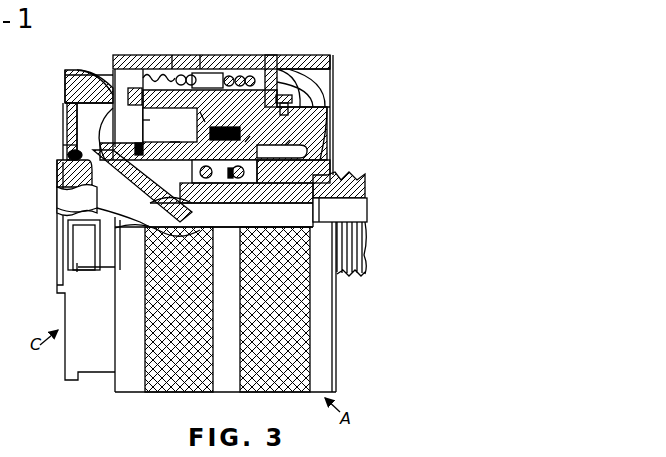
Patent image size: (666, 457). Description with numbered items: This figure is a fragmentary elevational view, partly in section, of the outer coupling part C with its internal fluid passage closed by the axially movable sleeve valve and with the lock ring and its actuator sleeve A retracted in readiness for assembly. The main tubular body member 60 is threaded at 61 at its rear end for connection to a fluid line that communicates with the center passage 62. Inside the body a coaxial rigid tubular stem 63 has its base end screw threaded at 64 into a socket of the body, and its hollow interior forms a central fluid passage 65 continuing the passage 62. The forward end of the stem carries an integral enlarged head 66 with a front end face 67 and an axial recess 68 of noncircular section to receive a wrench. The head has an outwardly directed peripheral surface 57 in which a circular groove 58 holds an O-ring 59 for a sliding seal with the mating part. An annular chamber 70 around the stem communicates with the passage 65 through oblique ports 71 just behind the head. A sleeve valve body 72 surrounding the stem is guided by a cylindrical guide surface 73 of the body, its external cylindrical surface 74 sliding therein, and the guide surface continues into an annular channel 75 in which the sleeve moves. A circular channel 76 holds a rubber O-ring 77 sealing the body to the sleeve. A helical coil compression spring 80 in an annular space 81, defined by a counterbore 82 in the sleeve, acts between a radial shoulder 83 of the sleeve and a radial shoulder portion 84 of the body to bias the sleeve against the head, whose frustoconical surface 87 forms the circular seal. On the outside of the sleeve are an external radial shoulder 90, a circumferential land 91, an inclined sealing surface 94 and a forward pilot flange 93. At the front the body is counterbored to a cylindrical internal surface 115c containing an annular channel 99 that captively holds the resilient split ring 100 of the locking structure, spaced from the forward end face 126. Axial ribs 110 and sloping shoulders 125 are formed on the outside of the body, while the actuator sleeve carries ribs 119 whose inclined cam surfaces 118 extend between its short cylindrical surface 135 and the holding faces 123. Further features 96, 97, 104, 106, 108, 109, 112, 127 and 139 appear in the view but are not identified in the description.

The peripheral surface 57 is at (58, 285).
The circular groove 58 is at (68, 152).
The O-ring 59 is at (63, 144).
The main tubular body member 60 is at (330, 110).
The threads 61 is at (345, 279).
The center passage 62 is at (336, 217).
The tubular stem 63 is at (125, 304).
The threaded joint 64 is at (282, 180).
The central fluid passage 65 is at (270, 219).
The head 66 is at (98, 190).
The front end face 67 is at (58, 170).
The axial recess 68 is at (60, 208).
The annular chamber 70 is at (185, 131).
The oblique ports 71 is at (160, 246).
The sleeve valve body 72 is at (158, 168).
The cylindrical guide surface 73 is at (262, 146).
The external cylindrical surface 74 is at (201, 124).
The annular channel 75 is at (337, 134).
The circular channel 76 is at (250, 137).
The O-ring 77 is at (231, 124).
The helical coil compression spring 80 is at (228, 208).
The annular space 81 is at (160, 195).
The counterbore 82 is at (225, 307).
The radial shoulder 83 is at (167, 135).
The radial shoulder portion 84 is at (224, 171).
The frustoconical surface 87 is at (110, 241).
The external radial shoulder 90 is at (143, 132).
The circumferential land 91 is at (125, 146).
The pilot flange 93 is at (63, 131).
The inclined sealing surface 94 is at (65, 113).
The curved chamber 96 is at (287, 91).
The wall 97 is at (285, 98).
The annular channel 99 is at (65, 78).
The resilient split ring 100 is at (124, 76).
The o-rings 104 is at (229, 77).
The plate edge 106 is at (289, 62).
The bolt 108 is at (293, 100).
The body portion 109 is at (290, 136).
The axial ribs 110 is at (90, 82).
The column 112 is at (251, 58).
The cylindrical internal surface 115c is at (65, 105).
The inclined cam surfaces 118 is at (141, 84).
The actuator sleeve ribs 119 is at (207, 75).
The holding faces 123 is at (174, 78).
The sloping shoulders 125 is at (110, 90).
The forward end face 126 is at (63, 69).
The rings 127 is at (190, 73).
The cylindrical surface 135 is at (113, 73).
The right wall 139 is at (305, 62).